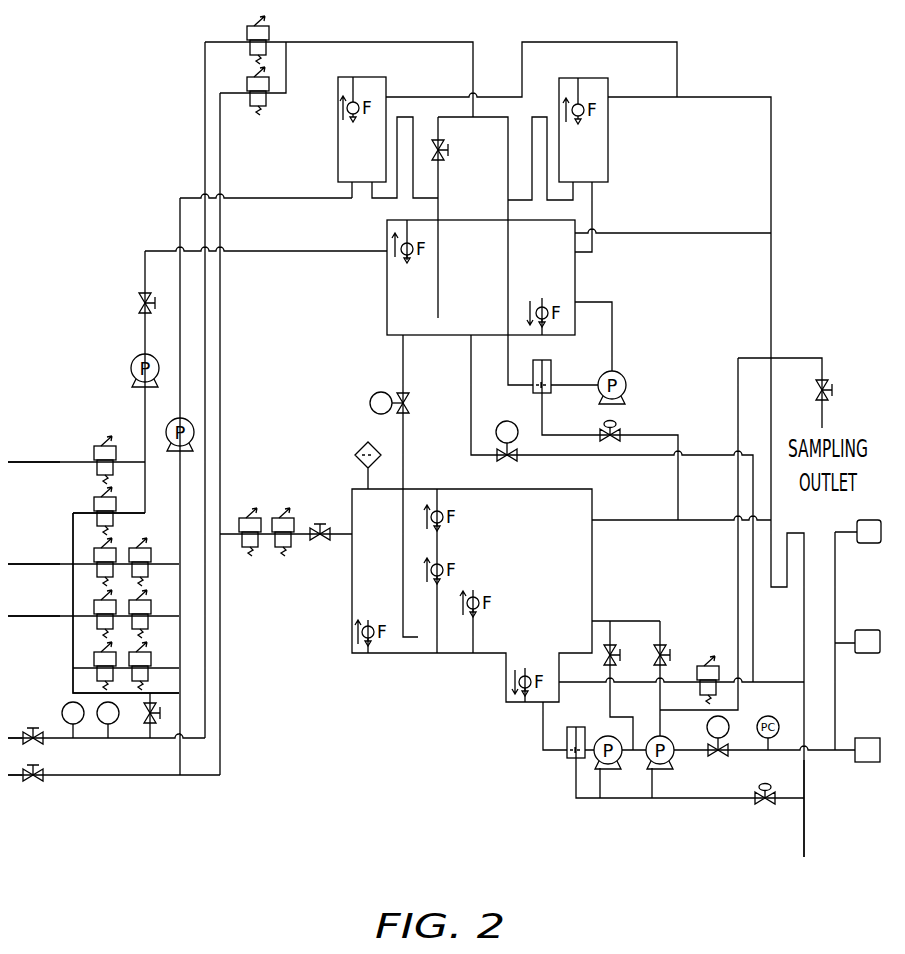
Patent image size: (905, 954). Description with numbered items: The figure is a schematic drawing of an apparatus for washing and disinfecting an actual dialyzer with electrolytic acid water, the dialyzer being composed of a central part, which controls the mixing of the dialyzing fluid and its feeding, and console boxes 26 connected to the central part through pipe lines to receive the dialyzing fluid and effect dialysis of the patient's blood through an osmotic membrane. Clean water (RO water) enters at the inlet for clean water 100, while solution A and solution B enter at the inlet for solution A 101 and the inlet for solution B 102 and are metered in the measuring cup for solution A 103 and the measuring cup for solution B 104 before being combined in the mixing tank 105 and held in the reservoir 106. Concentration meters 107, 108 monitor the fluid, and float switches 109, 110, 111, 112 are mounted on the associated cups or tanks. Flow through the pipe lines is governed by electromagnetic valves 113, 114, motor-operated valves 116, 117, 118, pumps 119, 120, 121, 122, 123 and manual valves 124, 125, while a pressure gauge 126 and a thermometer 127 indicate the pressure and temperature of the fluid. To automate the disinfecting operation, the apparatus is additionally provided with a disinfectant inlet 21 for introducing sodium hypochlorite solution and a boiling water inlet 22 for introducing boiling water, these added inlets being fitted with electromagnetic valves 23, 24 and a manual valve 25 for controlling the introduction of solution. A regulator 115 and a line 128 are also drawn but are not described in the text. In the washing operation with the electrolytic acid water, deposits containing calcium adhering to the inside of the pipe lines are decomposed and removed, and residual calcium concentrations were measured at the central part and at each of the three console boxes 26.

The disinfectant inlet 21 is at (28, 613).
The boiling water inlet 22 is at (14, 782).
The electromagnetic valve 23 is at (150, 650).
The electromagnetic valve 24 is at (150, 597).
The manual valve 25 is at (40, 780).
The console box 26 is at (866, 545).
The inlet for clean water 100 is at (12, 735).
The inlet for solution A 101 is at (25, 560).
The inlet for solution B 102 is at (25, 458).
The measuring cup for solution A 103 is at (608, 137).
The measuring cup for solution B 104 is at (338, 145).
The mixing tank 105 is at (575, 272).
The reservoir 106 is at (592, 562).
The concentration meter 107 is at (533, 372).
The concentration meter 108 is at (565, 758).
The float switch 109 is at (362, 77).
The float switch 110 is at (580, 78).
The float switch 111 is at (387, 221).
The float switch 112 is at (446, 512).
The electromagnetic valve 113 is at (42, 742).
The electromagnetic valve 114 is at (160, 521).
The pressure regulator 115 is at (105, 447).
The motor-operated valve 116 is at (496, 440).
The motor-operated valve 117 is at (370, 397).
The motor-operated valve 118 is at (722, 755).
The pump 119 is at (194, 432).
The pump 120 is at (131, 362).
The pump 121 is at (626, 378).
The pump 122 is at (600, 798).
The pump 123 is at (652, 798).
The manual valve 124 is at (668, 648).
The manual valve 125 is at (603, 650).
The pressure gauge 126 is at (65, 702).
The thermometer 127 is at (112, 722).
The drain line 128 is at (806, 855).